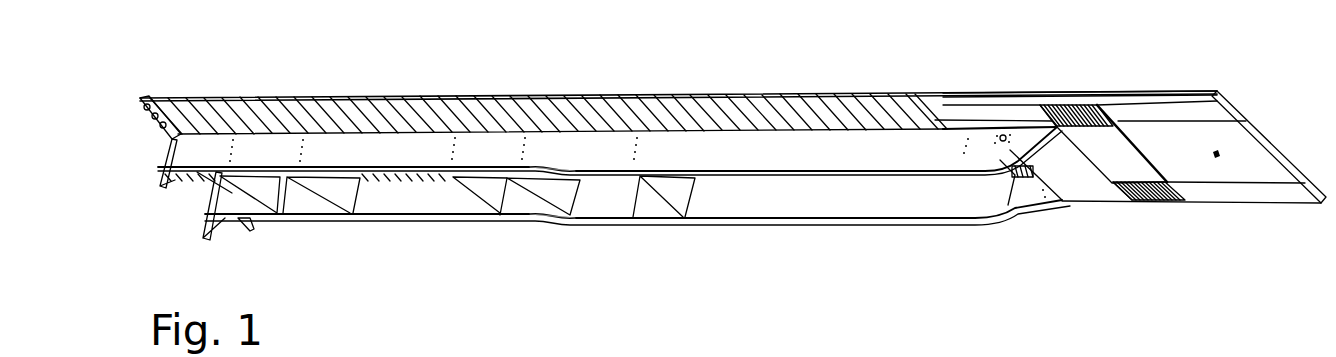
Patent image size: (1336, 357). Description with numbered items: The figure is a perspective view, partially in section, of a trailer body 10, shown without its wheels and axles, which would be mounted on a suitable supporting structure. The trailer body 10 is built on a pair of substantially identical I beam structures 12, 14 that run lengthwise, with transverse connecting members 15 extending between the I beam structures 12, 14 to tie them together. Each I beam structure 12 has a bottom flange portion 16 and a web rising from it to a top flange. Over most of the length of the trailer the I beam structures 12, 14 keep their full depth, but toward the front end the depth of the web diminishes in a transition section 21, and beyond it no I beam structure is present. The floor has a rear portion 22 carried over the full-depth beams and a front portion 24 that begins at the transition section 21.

The trailer body 10 is at (933, 72).
The I beam structure 12 is at (807, 203).
The I beam structure 14 is at (907, 195).
The transverse connecting members 15 is at (343, 195).
The bottom flange portion 16 is at (713, 177).
The transition section 21 is at (1058, 235).
The rear portion of the floor 22 is at (668, 63).
The front portion of the floor 24 is at (1110, 70).